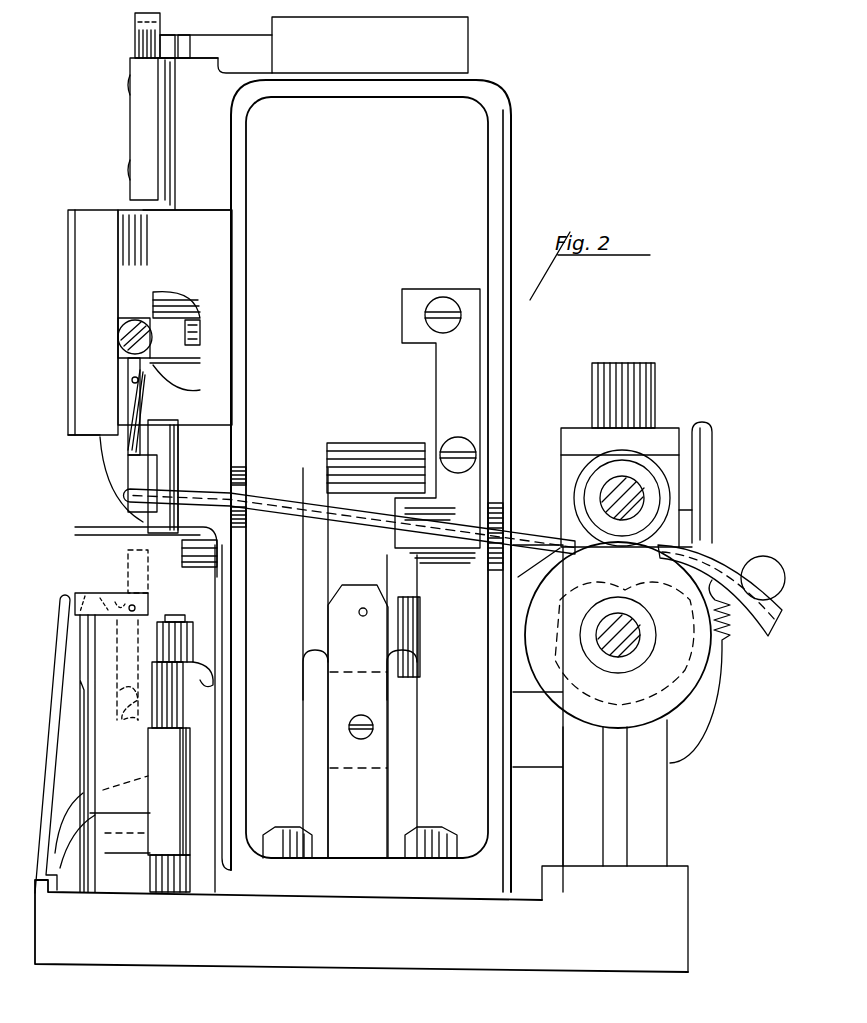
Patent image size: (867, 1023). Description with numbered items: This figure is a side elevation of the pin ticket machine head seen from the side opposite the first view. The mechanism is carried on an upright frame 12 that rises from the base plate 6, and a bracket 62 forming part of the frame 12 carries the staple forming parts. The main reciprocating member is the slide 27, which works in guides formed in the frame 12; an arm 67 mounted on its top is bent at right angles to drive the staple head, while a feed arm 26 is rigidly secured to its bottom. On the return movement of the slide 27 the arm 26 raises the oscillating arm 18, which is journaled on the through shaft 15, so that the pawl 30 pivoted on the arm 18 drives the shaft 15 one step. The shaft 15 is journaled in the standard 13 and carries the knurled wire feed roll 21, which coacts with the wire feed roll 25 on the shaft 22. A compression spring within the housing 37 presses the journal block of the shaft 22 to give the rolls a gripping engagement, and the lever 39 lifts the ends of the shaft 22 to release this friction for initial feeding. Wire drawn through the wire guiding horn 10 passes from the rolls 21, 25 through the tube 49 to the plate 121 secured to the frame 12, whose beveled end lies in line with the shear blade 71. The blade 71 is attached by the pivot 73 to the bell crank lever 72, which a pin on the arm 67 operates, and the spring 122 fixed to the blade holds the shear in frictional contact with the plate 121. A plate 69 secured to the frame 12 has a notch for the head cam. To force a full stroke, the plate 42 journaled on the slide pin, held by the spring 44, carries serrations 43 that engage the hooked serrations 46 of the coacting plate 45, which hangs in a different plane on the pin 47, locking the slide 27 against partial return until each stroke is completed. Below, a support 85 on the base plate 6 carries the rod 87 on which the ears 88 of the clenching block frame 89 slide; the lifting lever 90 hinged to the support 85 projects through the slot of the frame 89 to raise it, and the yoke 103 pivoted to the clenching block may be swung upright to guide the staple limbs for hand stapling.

The base plate 6 is at (336, 960).
The wire guiding horn 10 is at (765, 612).
The upright frame 12 is at (345, 162).
The standard 13 is at (655, 800).
The through shaft 15 is at (641, 640).
The oscillating arm 18 is at (730, 625).
The wire feed roll 21 is at (698, 688).
The shaft 22 is at (590, 500).
The coacting wire feed roll 25 is at (665, 485).
The feed arm 26 is at (542, 753).
The slide 27 is at (452, 55).
The pawl 30 is at (745, 560).
The housing 37 is at (655, 400).
The lever 39 is at (712, 500).
The plate 42 is at (380, 570).
The serrations 43 is at (370, 455).
The spring 44 is at (380, 648).
The coacting plate 45 is at (445, 355).
The hooked serrations 46 is at (428, 505).
The pin 47 is at (440, 305).
The tube 49 is at (262, 490).
The bracket 62 is at (93, 322).
The arm 67 is at (243, 55).
The plate 69 is at (142, 118).
The shear blade 71 is at (125, 388).
The bell crank lever 72 is at (188, 352).
The pivot 73 is at (125, 337).
The support 85 is at (202, 680).
The rod 87 is at (188, 708).
The ears 88 is at (193, 758).
The clenching block frame 89 is at (92, 753).
The lifting lever 90 is at (193, 800).
The yoke 103 is at (75, 595).
The plate 121 is at (145, 472).
The spring 122 is at (138, 420).